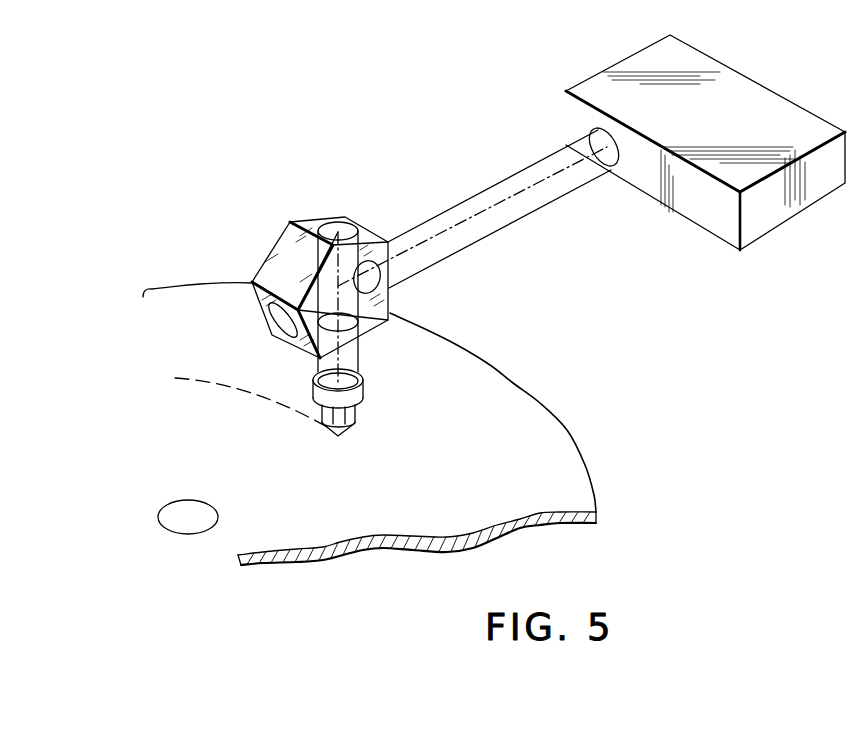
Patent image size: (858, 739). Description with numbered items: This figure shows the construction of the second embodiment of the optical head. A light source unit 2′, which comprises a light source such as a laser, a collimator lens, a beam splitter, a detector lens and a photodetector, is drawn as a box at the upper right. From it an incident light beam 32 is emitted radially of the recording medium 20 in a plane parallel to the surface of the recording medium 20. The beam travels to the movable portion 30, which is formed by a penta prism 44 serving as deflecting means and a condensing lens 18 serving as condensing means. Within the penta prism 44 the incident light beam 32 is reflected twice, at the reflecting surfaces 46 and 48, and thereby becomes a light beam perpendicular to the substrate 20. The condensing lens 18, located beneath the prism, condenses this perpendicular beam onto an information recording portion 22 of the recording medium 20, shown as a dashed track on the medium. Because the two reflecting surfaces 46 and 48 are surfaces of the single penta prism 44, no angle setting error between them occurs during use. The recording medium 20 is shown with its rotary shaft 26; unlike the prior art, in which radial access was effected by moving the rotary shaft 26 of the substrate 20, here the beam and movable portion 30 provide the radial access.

The light source unit 2′ is at (770, 103).
The incident light beam 32 is at (522, 213).
The movable portion 30 is at (359, 208).
The reflecting surface 48 is at (302, 223).
The penta prism 44 is at (380, 240).
The reflecting surface 46 is at (256, 297).
The condensing lens 18 is at (362, 392).
The recording medium 20 is at (513, 388).
The information recording portion 22 is at (220, 383).
The rotary shaft 26 is at (210, 517).